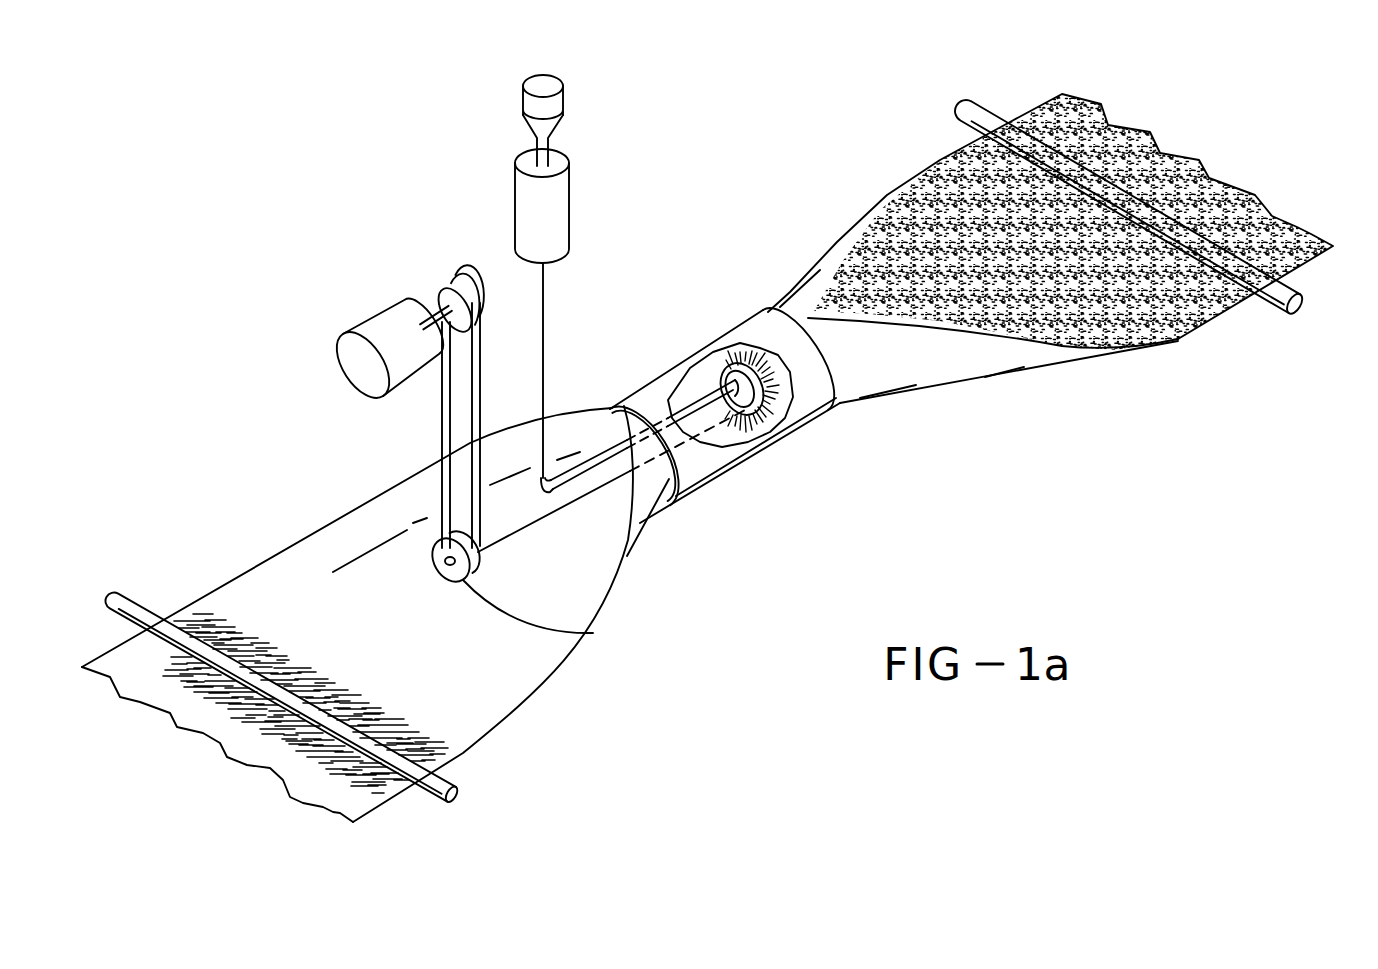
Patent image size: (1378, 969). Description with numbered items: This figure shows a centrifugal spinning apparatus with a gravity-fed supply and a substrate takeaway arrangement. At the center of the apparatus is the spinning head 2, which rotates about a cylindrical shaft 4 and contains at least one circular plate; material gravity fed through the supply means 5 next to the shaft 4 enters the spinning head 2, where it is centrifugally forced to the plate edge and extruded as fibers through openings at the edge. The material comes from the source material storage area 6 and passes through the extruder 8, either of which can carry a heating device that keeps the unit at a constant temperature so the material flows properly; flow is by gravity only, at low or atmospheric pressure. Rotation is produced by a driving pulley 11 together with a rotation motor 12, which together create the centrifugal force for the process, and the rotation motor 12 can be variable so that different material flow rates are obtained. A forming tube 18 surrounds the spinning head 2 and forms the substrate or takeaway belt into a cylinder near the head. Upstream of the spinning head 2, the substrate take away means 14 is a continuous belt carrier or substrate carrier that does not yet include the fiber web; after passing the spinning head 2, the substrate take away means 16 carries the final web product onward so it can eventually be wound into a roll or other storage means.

The spinning head 2 is at (757, 414).
The cylindrical shaft 4 is at (708, 417).
The supply means 5 is at (547, 318).
The source material storage area 6 is at (530, 104).
The extruder 8 is at (551, 218).
The driving pulley 11 is at (590, 633).
The rotation motor 12 is at (378, 323).
The substrate take away means 14 is at (633, 522).
The substrate take away means 16 is at (964, 355).
The forming tube 18 is at (717, 460).